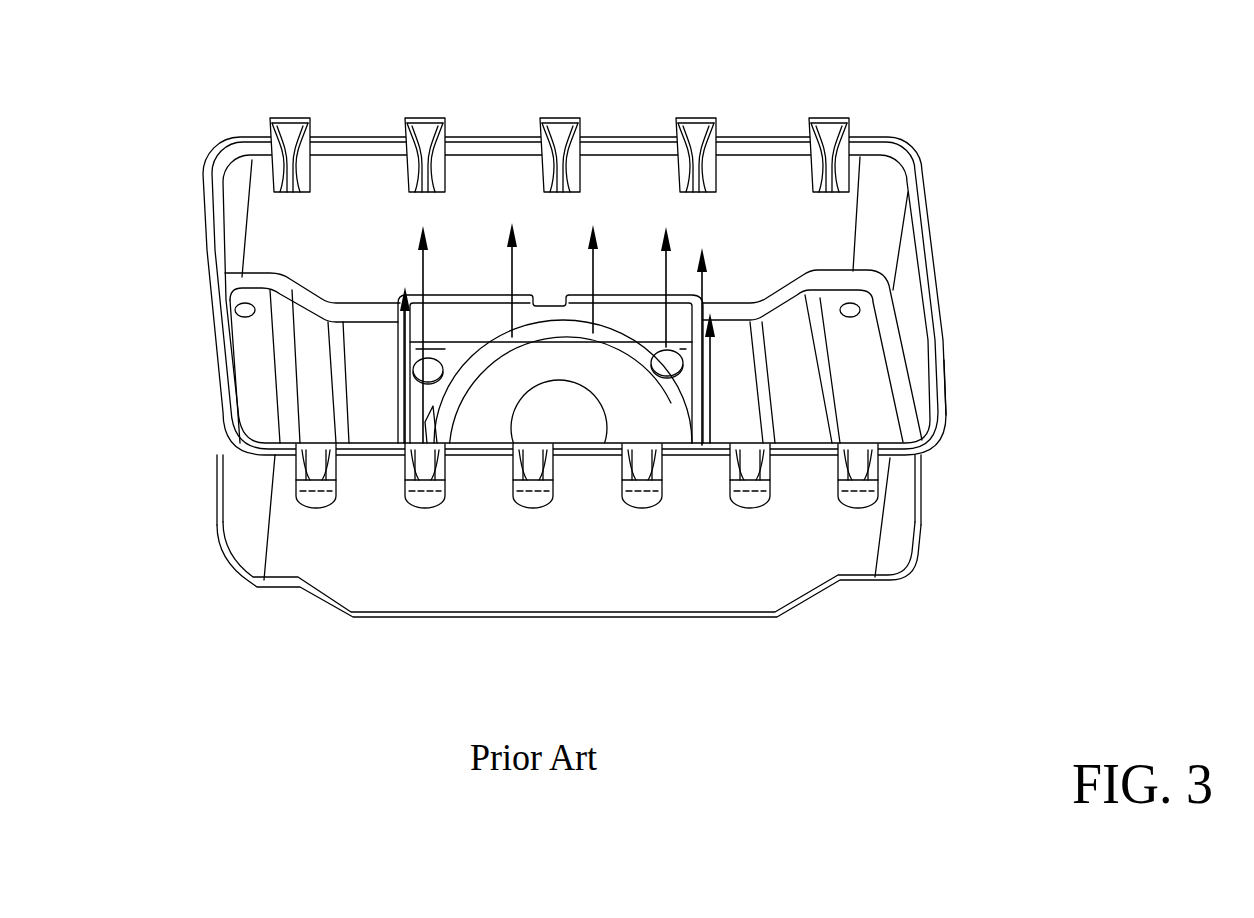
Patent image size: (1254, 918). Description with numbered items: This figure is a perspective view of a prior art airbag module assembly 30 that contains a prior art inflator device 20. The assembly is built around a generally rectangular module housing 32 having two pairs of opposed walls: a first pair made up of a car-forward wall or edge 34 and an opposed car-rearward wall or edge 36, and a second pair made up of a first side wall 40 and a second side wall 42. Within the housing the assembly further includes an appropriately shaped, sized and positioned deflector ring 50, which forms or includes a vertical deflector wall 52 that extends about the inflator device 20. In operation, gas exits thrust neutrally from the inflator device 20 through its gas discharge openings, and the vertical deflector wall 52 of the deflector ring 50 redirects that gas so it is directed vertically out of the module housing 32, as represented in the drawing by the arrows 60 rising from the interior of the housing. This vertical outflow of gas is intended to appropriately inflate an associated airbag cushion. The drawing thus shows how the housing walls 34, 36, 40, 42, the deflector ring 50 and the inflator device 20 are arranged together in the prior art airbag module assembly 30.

The inflator device 20 is at (632, 412).
The airbag module assembly 30 is at (998, 137).
The module housing 32 is at (950, 313).
The car-forward wall 34 is at (760, 137).
The car-rearward wall 36 is at (765, 588).
The first side wall 40 is at (220, 378).
The second side wall 42 is at (946, 391).
The deflector ring 50 is at (472, 295).
The vertical deflector wall 52 is at (403, 377).
The arrows 60 is at (702, 290).